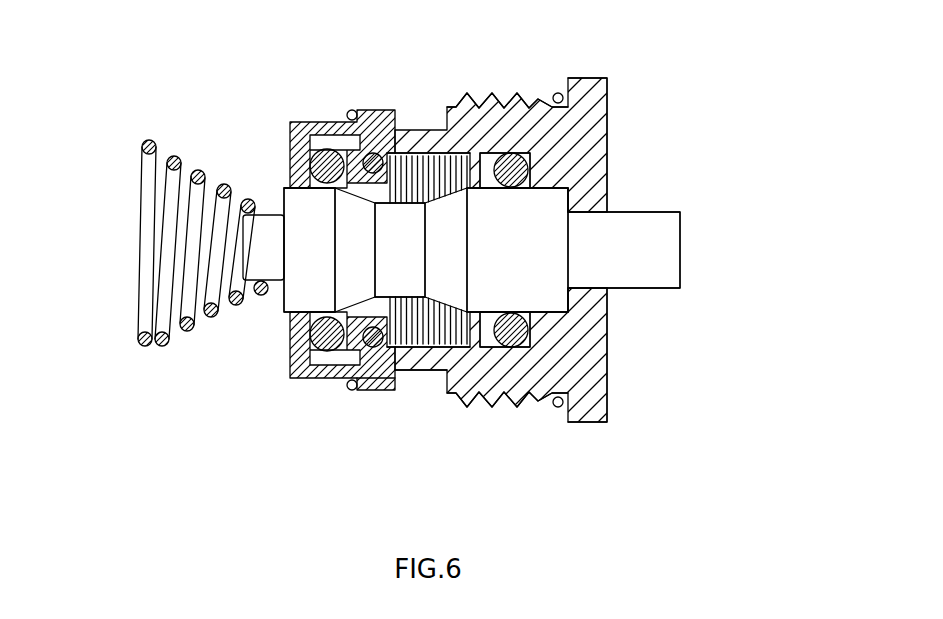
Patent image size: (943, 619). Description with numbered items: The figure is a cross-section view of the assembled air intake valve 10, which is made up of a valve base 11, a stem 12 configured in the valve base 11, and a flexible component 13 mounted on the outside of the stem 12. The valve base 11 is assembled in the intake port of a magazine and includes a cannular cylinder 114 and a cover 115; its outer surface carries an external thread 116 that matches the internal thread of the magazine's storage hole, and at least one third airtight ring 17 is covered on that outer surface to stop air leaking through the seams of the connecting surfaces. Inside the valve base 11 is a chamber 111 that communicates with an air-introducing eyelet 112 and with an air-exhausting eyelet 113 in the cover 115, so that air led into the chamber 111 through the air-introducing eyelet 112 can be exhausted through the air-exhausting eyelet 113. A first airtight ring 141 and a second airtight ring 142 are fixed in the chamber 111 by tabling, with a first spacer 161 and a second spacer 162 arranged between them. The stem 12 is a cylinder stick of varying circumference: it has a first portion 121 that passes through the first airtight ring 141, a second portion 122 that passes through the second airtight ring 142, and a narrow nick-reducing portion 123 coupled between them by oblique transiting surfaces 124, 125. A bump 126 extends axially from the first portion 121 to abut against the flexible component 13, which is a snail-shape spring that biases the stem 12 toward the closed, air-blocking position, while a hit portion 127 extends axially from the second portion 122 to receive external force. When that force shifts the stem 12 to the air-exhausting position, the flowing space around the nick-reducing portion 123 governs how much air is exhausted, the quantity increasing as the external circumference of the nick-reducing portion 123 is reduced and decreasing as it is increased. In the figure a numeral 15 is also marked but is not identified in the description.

The air intake valve 10 is at (694, 190).
The valve base 11 is at (614, 90).
The stem 12 is at (692, 271).
The flexible component 13 is at (147, 283).
The threads 15 is at (430, 150).
The third airtight ring 17 is at (353, 110).
The chamber 111 is at (377, 350).
The air-introducing eyelet 112 is at (420, 360).
The air-exhausting eyelet 113 is at (291, 198).
The cannular cylinder 114 is at (597, 372).
The cover 115 is at (330, 378).
The external thread 116 is at (561, 406).
The first portion 121 is at (283, 193).
The second portion 122 is at (547, 262).
The nick-reducing portion 123 is at (394, 148).
The transiting surface 124 is at (347, 270).
The transiting surface 125 is at (453, 300).
The bump 126 is at (252, 245).
The hit portion 127 is at (683, 248).
The first airtight ring 141 is at (300, 377).
The second airtight ring 142 is at (511, 150).
The first spacer 161 is at (346, 118).
The second spacer 162 is at (482, 340).